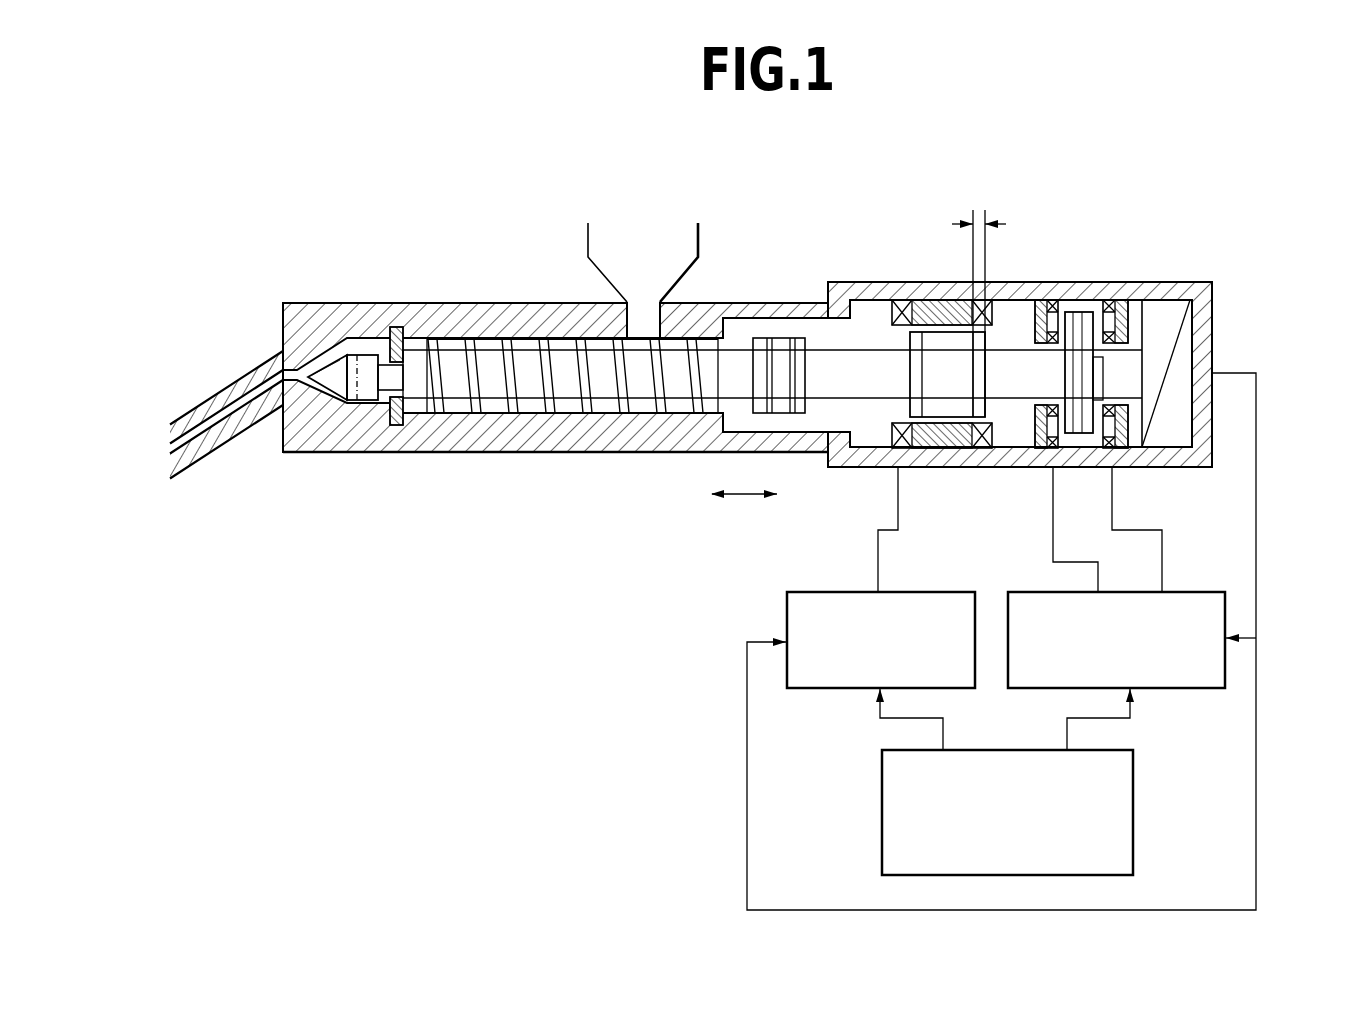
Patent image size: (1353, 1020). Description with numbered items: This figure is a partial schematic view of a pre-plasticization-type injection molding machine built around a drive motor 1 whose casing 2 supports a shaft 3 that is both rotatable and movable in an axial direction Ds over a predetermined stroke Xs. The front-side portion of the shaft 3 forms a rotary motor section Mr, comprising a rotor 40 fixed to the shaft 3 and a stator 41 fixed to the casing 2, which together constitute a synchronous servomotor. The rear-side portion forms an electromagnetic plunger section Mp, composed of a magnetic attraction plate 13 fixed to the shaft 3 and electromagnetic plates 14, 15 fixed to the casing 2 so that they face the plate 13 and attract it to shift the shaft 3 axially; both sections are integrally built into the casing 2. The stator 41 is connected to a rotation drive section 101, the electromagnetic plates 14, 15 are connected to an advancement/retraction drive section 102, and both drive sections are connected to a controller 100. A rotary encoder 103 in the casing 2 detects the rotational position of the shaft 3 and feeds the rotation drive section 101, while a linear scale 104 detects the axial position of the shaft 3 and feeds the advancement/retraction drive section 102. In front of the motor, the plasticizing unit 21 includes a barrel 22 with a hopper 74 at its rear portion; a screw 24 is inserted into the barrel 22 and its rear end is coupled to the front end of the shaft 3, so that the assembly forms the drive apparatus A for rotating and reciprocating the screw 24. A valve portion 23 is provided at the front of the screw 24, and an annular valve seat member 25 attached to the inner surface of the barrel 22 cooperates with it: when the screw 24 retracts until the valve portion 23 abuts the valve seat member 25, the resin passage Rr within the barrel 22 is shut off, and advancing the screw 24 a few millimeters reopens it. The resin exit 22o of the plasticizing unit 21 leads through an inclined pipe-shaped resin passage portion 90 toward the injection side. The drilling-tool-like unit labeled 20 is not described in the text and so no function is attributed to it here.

The drive motor 1 is at (1205, 208).
The casing 2 is at (1198, 278).
The shaft 3 is at (865, 350).
The magnetic attraction plate 13 is at (1080, 312).
The electromagnetic plate 14 is at (1040, 448).
The electromagnetic plate 15 is at (1118, 448).
The drilling tool unit 20 is at (462, 237).
The plasticizing unit 21 is at (598, 452).
The barrel 22 is at (467, 452).
The resin exit 22o is at (296, 372).
The valve portion 23 is at (362, 345).
The screw 24 is at (532, 352).
The valve seat member 25 is at (385, 425).
The rotor 40 is at (910, 407).
The stator 41 is at (932, 448).
The hopper 74 is at (702, 242).
The resin passage portion 90 is at (220, 391).
The controller 100 is at (882, 802).
The rotation drive section 101 is at (783, 615).
The advancement/retraction drive section 102 is at (1202, 688).
The rotary encoder 103 is at (1192, 333).
The linear scale 104 is at (1192, 347).
The drive apparatus A is at (1222, 307).
The rotary motor section Mr is at (933, 277).
The electromagnetic plunger section Mp is at (1057, 275).
The predetermined stroke Xs is at (980, 210).
The axial direction Ds is at (745, 497).
The resin passage Rr is at (360, 407).